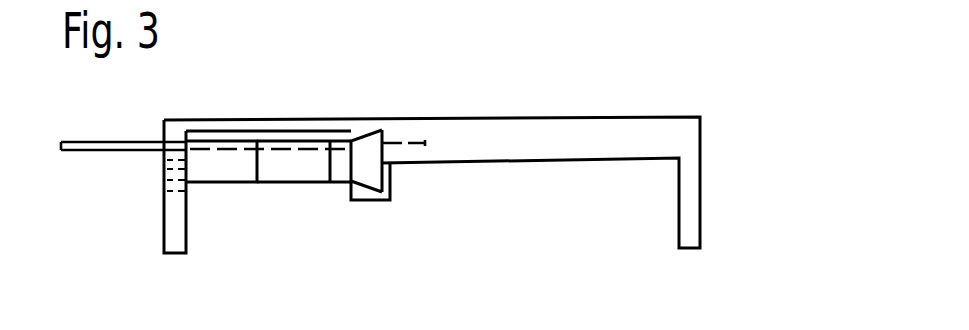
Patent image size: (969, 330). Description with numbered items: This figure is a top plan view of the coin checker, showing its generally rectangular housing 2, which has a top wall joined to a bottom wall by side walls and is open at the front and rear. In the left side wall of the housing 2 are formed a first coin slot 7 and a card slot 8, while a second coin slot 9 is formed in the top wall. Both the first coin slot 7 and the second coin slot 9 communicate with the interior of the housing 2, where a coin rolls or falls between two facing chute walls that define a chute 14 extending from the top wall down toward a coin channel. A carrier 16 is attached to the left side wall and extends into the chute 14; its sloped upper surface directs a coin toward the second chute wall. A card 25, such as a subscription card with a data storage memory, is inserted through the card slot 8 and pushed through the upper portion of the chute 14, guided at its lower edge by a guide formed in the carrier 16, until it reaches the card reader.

The housing 2 is at (460, 148).
The first coin slot 7 is at (164, 188).
The card slot 8 is at (163, 160).
The second coin slot 9 is at (367, 168).
The chute 14 is at (285, 167).
The carrier 16 is at (220, 162).
The card 25 is at (100, 152).